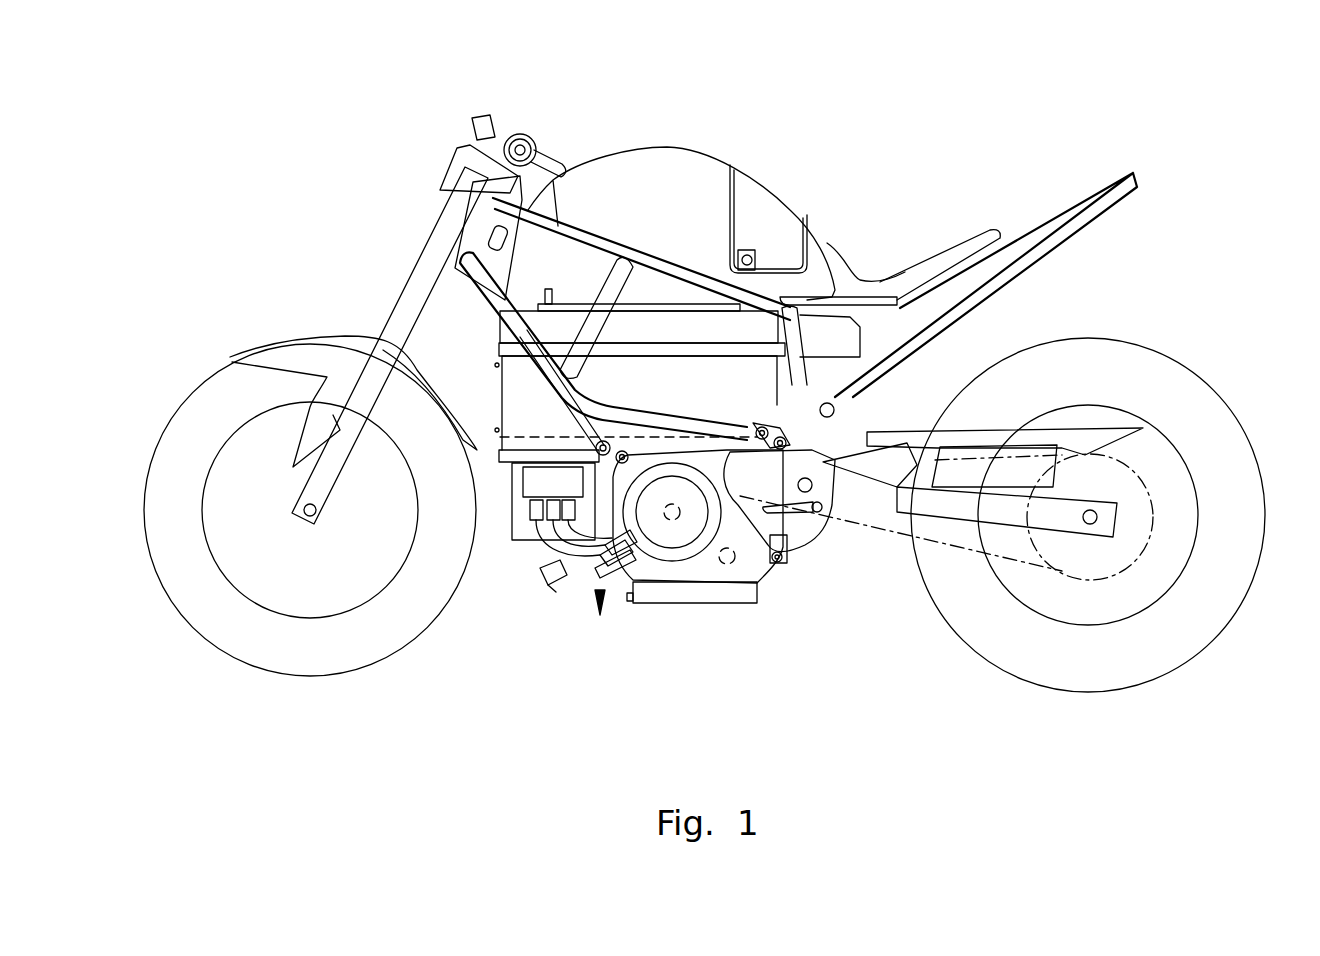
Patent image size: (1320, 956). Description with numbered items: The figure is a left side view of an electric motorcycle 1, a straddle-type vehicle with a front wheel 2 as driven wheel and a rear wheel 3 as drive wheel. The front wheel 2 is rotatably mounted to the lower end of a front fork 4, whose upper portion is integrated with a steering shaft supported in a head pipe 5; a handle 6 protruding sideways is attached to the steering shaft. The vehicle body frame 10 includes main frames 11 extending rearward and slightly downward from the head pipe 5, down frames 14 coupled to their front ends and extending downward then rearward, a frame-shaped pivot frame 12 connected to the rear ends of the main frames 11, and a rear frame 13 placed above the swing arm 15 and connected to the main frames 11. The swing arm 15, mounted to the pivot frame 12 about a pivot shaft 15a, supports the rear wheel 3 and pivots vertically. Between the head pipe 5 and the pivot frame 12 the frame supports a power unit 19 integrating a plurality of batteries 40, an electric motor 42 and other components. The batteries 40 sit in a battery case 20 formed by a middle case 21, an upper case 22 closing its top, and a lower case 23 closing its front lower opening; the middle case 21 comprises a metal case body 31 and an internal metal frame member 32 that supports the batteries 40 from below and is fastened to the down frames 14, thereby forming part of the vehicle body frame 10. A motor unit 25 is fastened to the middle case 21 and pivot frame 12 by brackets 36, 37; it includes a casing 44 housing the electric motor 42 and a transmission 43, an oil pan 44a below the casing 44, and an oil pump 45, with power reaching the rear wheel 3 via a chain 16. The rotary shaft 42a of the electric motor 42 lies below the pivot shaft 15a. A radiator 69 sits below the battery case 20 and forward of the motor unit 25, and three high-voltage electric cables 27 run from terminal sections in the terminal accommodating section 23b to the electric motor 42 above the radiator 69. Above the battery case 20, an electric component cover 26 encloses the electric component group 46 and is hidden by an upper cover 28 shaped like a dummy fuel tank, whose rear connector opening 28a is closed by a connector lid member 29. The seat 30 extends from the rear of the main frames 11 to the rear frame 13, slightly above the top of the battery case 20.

The electric motorcycle 1 is at (372, 118).
The front wheel 2 is at (212, 378).
The rear wheel 3 is at (1208, 374).
The front fork 4 is at (397, 313).
The head pipe 5 is at (473, 237).
The handle 6 is at (550, 147).
The vehicle body frame 10 is at (1103, 166).
The main frame 11 is at (575, 205).
The pivot frame 12 is at (803, 545).
The rear frame 13 is at (1047, 204).
The down frame 14 is at (490, 328).
The swing arm 15 is at (953, 577).
The pivot shaft 15a is at (833, 543).
The chain 16 is at (938, 547).
The power unit 19 is at (726, 604).
The battery case 20 is at (605, 523).
The middle case 21 is at (517, 522).
The upper case 22 is at (560, 323).
The lower case 23 is at (549, 546).
The terminal accommodating section 23b is at (553, 460).
The motor unit 25 is at (650, 568).
The electric component cover 26 is at (662, 292).
The electric cable 27 is at (598, 617).
The upper cover 28 is at (707, 152).
The connector opening 28a is at (815, 232).
The connector lid member 29 is at (780, 215).
The seat 30 is at (912, 268).
The case body 31 is at (880, 375).
The frame member 32 is at (840, 410).
The bracket 36 is at (640, 414).
The bracket 37 is at (775, 562).
The battery 40 is at (680, 367).
The electric motor 42 is at (678, 542).
The rotary shaft 42a is at (672, 522).
The transmission 43 is at (745, 520).
The casing 44 is at (648, 572).
The oil pan 44a is at (787, 620).
The oil pump 45 is at (728, 566).
The electric component group 46 is at (593, 273).
The radiator 69 is at (555, 578).